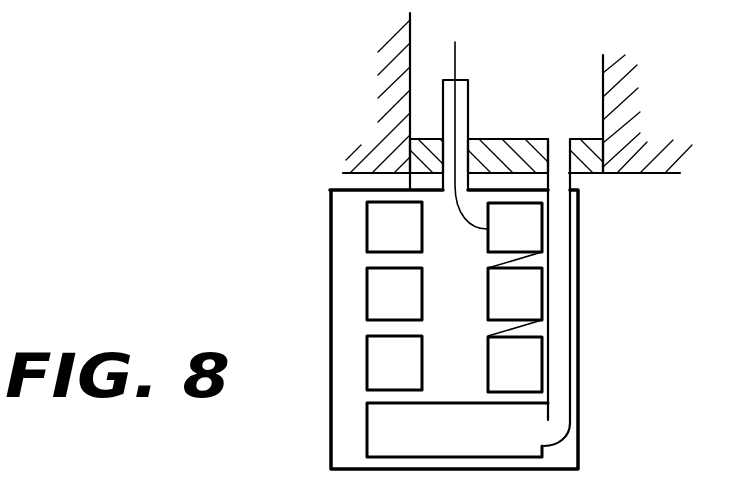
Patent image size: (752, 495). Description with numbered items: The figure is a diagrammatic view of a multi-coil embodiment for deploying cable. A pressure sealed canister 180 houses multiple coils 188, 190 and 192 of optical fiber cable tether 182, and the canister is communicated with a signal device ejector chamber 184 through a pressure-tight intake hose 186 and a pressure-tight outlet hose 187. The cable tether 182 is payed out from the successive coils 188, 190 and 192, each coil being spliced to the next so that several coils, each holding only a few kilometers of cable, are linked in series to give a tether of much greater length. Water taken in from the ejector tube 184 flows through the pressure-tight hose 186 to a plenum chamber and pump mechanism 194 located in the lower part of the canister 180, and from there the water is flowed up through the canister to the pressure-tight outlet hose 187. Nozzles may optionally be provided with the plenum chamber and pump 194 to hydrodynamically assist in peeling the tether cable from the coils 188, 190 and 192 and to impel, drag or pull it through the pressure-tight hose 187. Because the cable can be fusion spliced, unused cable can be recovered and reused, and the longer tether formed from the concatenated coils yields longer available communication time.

The pressure sealed canister 180 is at (330, 214).
The optical fiber cable tether 182 is at (455, 52).
The signal device ejector chamber 184 is at (506, 117).
The pressure-tight intake hose 186 is at (572, 178).
The pressure-tight outlet hose 187 is at (468, 125).
The coil 188 is at (533, 232).
The coil 190 is at (367, 290).
The coil 192 is at (540, 378).
The plenum chamber and pump mechanism 194 is at (372, 428).